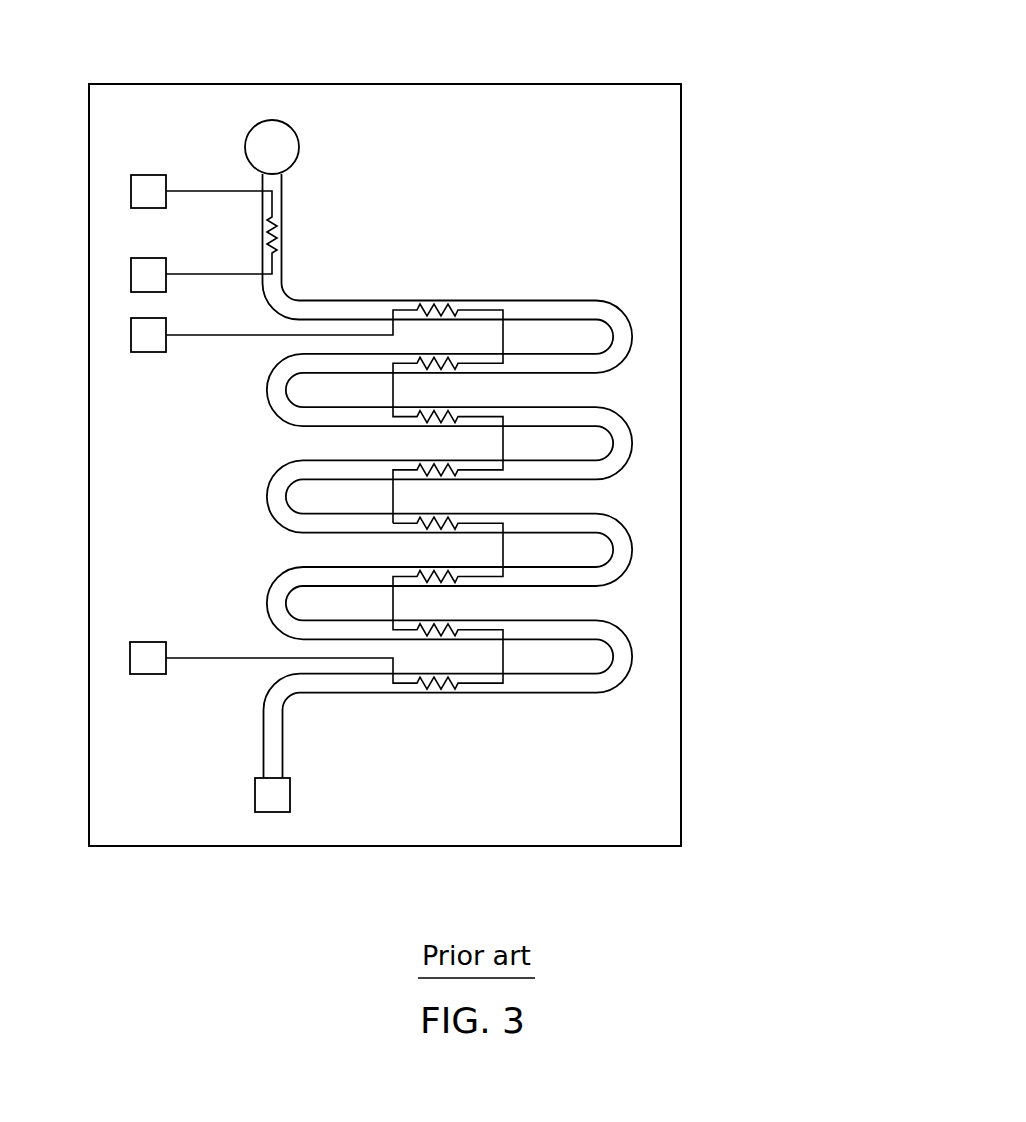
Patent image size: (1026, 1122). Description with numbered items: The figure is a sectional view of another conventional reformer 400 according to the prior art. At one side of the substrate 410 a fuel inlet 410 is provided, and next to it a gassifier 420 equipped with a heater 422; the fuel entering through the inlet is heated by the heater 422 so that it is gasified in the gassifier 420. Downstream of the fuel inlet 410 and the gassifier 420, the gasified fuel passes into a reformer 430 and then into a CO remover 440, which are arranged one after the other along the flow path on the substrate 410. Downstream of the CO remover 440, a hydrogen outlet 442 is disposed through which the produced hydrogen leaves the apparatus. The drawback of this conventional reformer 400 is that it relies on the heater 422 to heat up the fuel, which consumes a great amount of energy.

The conventional reformer 400 is at (795, 252).
The fuel inlet 410 is at (263, 135).
The gassifier 420 is at (302, 233).
The heater 422 is at (268, 219).
The reformer 430 is at (614, 392).
The CO remover 440 is at (624, 612).
The hydrogen outlet 442 is at (268, 800).